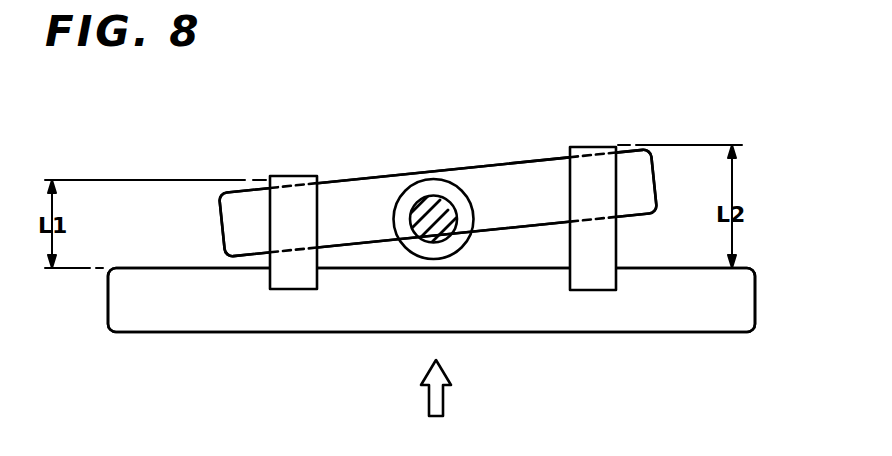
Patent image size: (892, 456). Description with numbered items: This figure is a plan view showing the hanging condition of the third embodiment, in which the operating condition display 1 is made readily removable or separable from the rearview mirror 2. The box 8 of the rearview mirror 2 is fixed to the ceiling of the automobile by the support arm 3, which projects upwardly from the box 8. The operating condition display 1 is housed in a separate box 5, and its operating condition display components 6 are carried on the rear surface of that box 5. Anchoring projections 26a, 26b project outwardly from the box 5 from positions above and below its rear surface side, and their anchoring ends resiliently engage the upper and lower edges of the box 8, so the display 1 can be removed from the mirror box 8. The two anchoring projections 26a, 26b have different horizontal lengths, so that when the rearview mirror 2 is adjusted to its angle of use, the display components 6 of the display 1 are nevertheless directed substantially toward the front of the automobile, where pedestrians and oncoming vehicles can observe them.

The operating condition display 1 is at (626, 348).
The rearview mirror 2 is at (365, 162).
The support arm 3 is at (436, 197).
The box 5 is at (313, 317).
The operating condition display components 6 is at (436, 405).
The box of the rearview mirror 8 is at (513, 183).
The anchoring projection 26a is at (288, 182).
The anchoring projection 26b is at (593, 147).